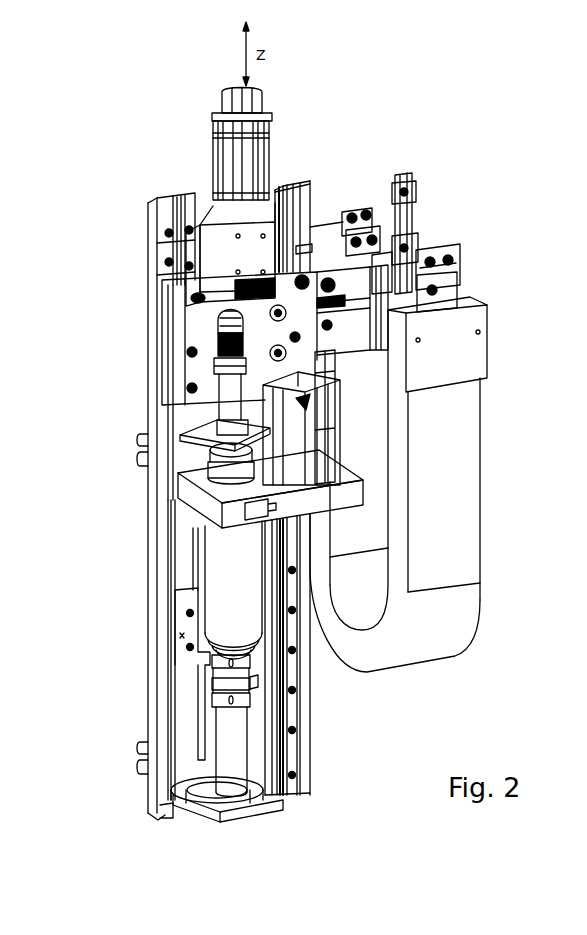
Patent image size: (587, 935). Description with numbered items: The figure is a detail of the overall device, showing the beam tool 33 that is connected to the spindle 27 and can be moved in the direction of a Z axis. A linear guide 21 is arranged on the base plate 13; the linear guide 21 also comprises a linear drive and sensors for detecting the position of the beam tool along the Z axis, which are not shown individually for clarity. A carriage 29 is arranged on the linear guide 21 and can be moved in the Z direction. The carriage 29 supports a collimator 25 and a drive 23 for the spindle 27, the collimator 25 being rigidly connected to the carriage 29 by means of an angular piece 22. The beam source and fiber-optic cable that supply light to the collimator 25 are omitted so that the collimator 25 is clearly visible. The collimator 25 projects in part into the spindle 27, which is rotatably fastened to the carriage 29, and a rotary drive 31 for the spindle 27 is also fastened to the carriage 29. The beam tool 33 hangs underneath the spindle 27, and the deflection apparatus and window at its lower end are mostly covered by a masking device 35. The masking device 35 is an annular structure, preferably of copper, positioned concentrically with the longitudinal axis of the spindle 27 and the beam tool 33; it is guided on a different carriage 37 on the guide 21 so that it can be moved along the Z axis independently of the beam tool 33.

The base plate 13 is at (172, 248).
The linear guide 21 is at (300, 740).
The angular piece 22 is at (178, 442).
The drive 23 is at (214, 128).
The collimator 25 is at (215, 333).
The spindle 27 is at (215, 565).
The carriage 29 is at (215, 380).
The rotary drive 31 is at (330, 432).
The beam tool 33 is at (225, 748).
The masking device 35 is at (195, 805).
The carriage 37 is at (190, 690).